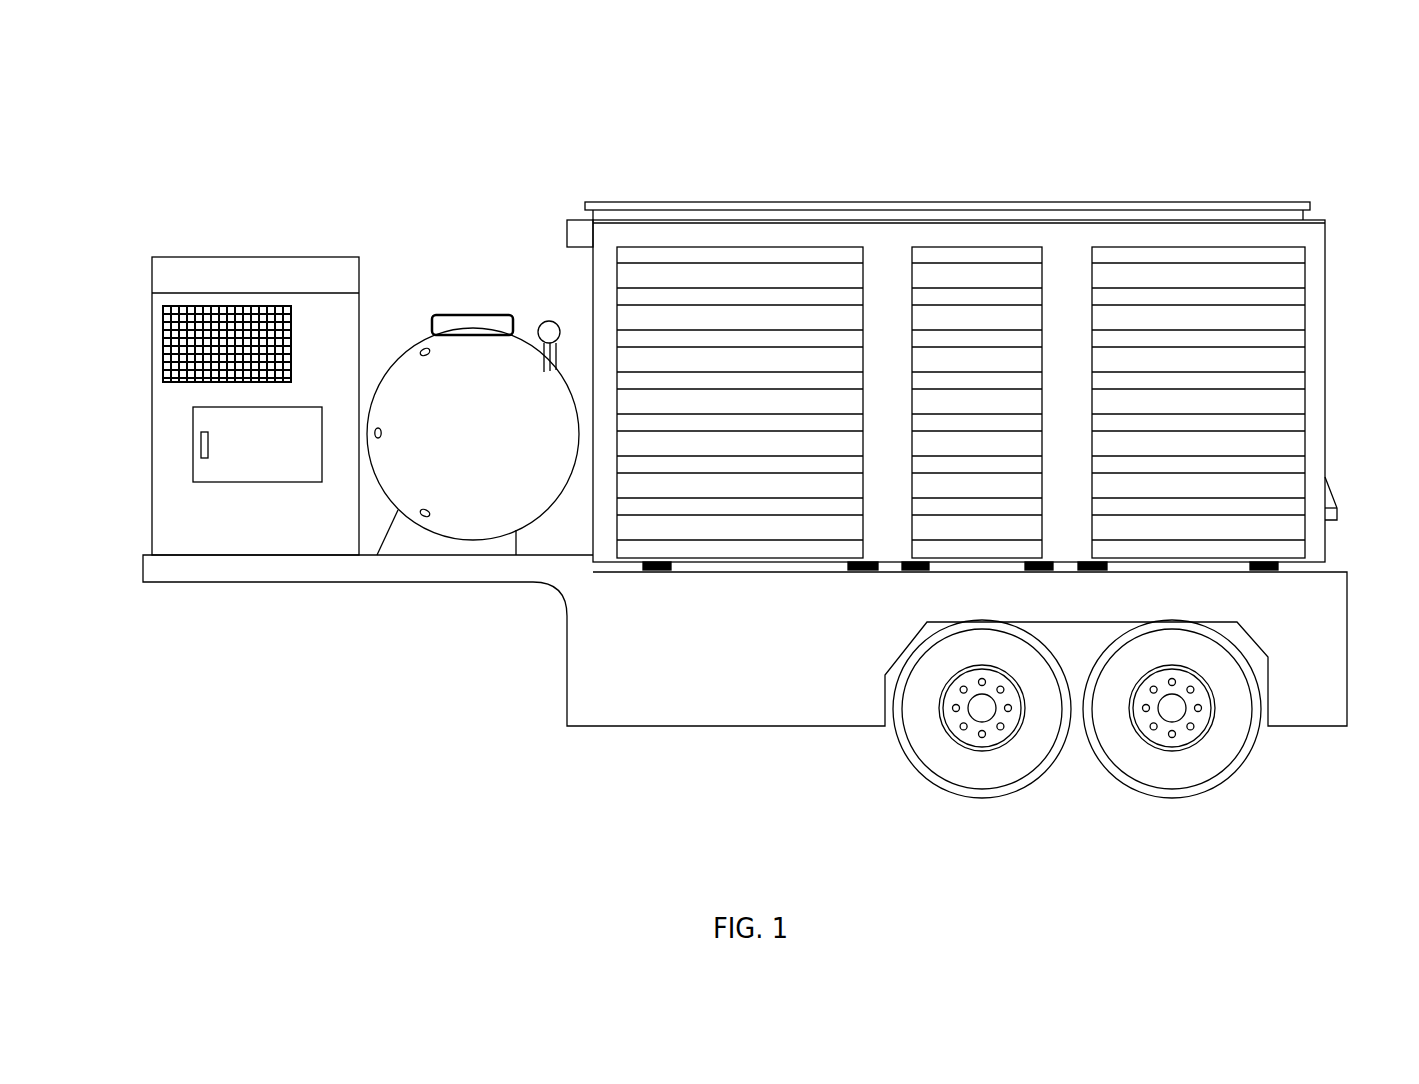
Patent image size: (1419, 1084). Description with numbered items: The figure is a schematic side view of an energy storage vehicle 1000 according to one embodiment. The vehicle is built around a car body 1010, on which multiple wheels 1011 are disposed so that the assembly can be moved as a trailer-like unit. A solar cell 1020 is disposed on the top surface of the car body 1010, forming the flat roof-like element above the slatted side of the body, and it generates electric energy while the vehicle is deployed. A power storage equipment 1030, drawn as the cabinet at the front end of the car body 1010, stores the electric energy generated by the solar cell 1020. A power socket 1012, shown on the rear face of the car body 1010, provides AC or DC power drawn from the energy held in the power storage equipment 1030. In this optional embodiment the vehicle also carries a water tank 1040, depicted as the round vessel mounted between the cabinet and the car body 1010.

The energy storage vehicle 1000 is at (185, 89).
The car body 1010 is at (1325, 275).
The wheels 1011 is at (1157, 775).
The power socket 1012 is at (1338, 495).
The solar cell 1020 is at (770, 202).
The power storage equipment 1030 is at (215, 257).
The water tank 1040 is at (447, 315).